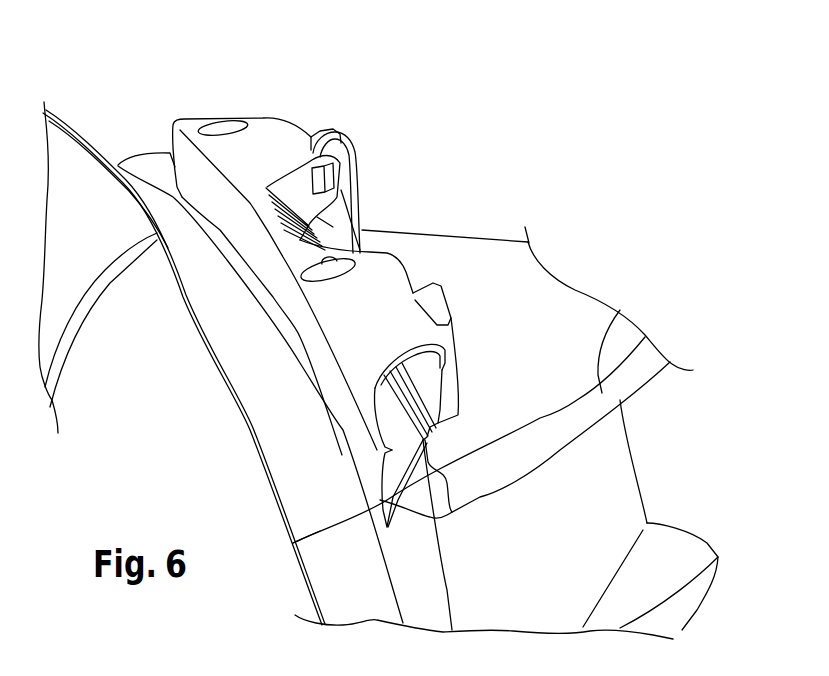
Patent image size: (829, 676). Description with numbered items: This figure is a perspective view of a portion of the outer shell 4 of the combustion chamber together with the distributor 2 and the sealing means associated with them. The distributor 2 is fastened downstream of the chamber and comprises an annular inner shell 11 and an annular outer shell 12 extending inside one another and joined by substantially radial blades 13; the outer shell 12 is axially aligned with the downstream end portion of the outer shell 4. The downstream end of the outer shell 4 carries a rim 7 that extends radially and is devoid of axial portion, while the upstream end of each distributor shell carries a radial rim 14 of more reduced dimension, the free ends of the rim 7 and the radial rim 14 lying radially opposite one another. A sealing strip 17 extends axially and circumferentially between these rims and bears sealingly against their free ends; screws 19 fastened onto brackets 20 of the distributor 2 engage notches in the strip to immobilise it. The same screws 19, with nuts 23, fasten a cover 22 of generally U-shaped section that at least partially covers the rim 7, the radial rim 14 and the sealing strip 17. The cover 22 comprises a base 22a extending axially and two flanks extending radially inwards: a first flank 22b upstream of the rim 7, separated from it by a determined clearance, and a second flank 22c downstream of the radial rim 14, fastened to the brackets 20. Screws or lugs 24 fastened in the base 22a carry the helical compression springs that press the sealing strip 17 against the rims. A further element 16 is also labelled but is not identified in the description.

The distributor 2 is at (587, 224).
The outer shell 4 is at (100, 148).
The rim 7 is at (155, 163).
The inner shell 11 is at (667, 602).
The outer shell 12 is at (623, 307).
The blades 13 is at (598, 500).
The radial rim 14 is at (452, 510).
The fastening device 16 is at (405, 133).
The sealing strip 17 is at (293, 543).
The screws 19 is at (363, 147).
The brackets 20 is at (347, 217).
The cover 22 is at (263, 104).
The base 22a is at (275, 150).
The first flank 22b is at (197, 163).
The second flank 22c is at (357, 177).
The nuts 23 is at (356, 145).
The screws or lugs 24 is at (222, 127).